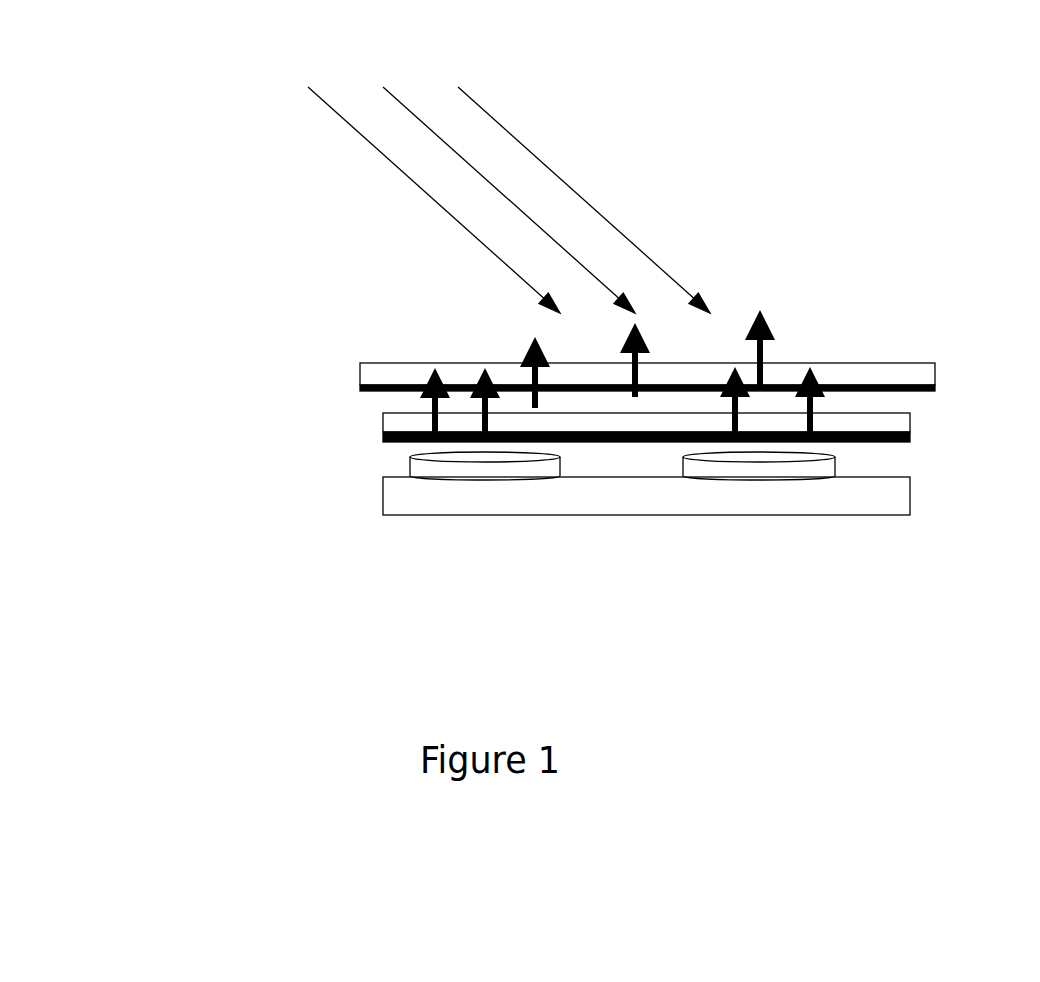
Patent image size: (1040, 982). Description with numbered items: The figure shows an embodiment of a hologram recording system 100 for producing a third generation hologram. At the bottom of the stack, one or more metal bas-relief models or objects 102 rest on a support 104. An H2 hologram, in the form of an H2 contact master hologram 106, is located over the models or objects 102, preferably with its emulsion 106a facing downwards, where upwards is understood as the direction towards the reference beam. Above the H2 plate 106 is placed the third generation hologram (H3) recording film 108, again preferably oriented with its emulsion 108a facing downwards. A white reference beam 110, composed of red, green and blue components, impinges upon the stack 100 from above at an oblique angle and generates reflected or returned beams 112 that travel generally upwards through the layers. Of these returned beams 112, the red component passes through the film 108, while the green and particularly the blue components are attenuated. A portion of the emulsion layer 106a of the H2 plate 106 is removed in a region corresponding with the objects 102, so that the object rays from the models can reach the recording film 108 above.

The hologram recording system 100 is at (253, 590).
The metal bas-relief models 102 is at (503, 465).
The support 104 is at (662, 507).
The H2 contact master hologram 106 is at (892, 427).
The emulsion of the H2 plate 106a is at (893, 442).
The H3 recording film 108 is at (935, 366).
The emulsion of the H3 recording film 108a is at (918, 391).
The reference beam 110 is at (400, 49).
The reflected or returned beams 112 is at (776, 308).